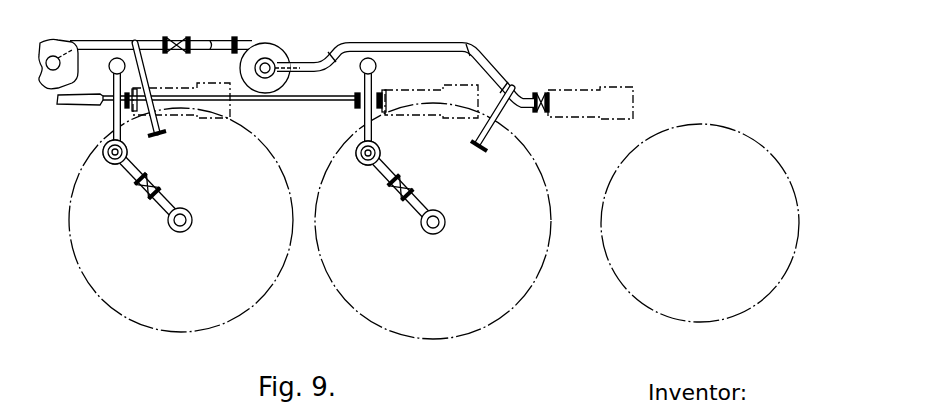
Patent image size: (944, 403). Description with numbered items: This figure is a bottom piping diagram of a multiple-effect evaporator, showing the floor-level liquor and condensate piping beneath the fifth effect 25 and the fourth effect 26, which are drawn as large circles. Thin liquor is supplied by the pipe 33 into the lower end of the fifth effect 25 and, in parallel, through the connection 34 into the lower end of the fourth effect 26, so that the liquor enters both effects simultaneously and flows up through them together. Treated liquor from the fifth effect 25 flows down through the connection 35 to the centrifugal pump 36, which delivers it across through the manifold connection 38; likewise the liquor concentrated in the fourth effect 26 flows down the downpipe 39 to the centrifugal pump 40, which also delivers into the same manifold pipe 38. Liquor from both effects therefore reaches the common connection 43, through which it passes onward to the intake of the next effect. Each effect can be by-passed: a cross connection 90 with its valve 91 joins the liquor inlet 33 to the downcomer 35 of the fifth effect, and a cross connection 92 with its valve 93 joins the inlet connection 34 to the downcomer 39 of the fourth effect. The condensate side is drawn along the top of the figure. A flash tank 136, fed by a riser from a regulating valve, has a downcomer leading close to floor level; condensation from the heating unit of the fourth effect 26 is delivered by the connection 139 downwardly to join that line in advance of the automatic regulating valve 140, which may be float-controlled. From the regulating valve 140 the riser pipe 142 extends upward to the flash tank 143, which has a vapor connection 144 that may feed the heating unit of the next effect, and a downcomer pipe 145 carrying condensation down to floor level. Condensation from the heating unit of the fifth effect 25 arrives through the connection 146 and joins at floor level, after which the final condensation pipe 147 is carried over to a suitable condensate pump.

The fifth effect 25 is at (368, 320).
The fourth effect 26 is at (118, 318).
The pipe 33 is at (446, 218).
The connection 34 is at (193, 218).
The connection 35 is at (355, 153).
The centrifugal pump 36 is at (405, 91).
The manifold connection 38 is at (282, 101).
The downpipe 39 is at (103, 153).
The centrifugal pump 40 is at (169, 88).
The common connection 43 is at (83, 106).
The cross connection 90 is at (390, 165).
The valve 91 is at (410, 182).
The cross connection 92 is at (138, 165).
The valve 93 is at (160, 184).
The flash tank 136 is at (57, 40).
The connection 139 is at (146, 68).
The automatic regulating valve 140 is at (177, 37).
The riser pipe 142 is at (222, 38).
The flash tank 143 is at (268, 43).
The vapor connection 144 is at (256, 70).
The downcomer pipe 145 is at (303, 61).
The connection 146 is at (491, 144).
The final condensation pipe 147 is at (578, 88).